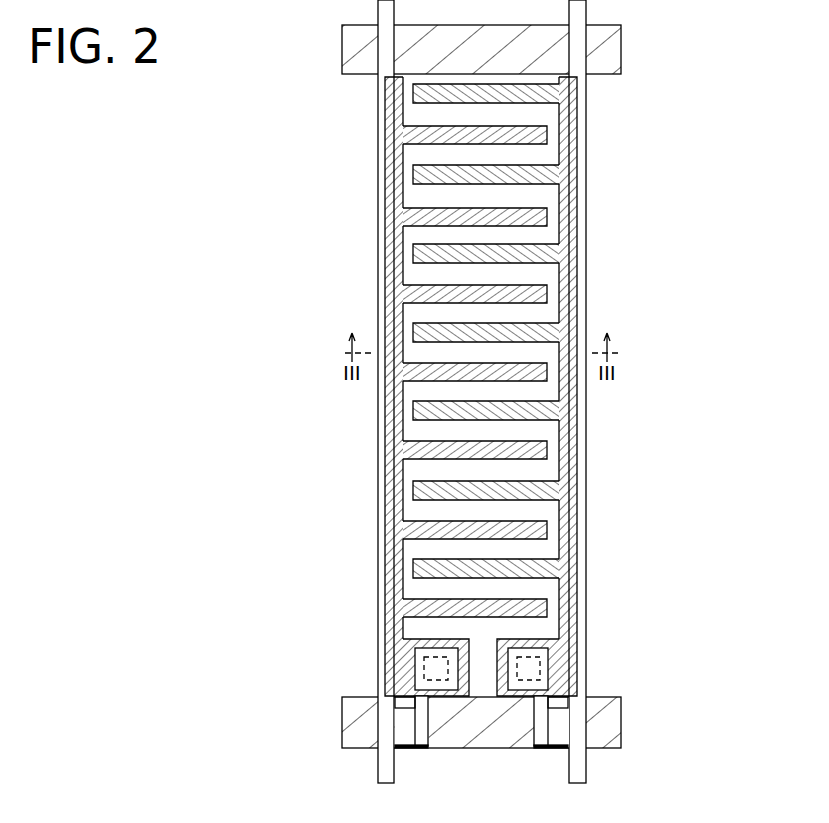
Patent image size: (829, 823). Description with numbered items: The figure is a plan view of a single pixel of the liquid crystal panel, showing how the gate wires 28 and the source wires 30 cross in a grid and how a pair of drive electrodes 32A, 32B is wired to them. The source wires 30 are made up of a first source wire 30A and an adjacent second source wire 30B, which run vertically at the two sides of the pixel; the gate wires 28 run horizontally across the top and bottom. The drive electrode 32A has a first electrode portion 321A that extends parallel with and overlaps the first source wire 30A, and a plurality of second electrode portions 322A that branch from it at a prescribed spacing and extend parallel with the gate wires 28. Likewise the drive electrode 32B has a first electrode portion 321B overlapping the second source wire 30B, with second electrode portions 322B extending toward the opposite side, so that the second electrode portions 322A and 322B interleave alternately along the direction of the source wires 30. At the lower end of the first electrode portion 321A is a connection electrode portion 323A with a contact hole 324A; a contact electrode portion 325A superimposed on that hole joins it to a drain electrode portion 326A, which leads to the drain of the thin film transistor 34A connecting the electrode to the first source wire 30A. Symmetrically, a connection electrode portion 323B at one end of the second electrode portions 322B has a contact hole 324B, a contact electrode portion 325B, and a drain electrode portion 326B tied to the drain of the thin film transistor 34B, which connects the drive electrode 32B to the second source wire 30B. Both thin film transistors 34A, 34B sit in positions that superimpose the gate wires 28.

The gate wire 28 is at (621, 47).
The source wire 30 is at (481, 386).
The first source wire 30A is at (454, 386).
The second source wire 30B is at (509, 386).
The drive electrode 32A is at (347, 386).
The drive electrode 32B is at (618, 386).
The first electrode portion 321A is at (385, 233).
The first electrode portion 321B is at (577, 268).
The second electrode portions 322A is at (547, 135).
The second electrode portions 322B is at (413, 92).
The connection electrode portion 323A is at (395, 648).
The connection electrode portion 323B is at (569, 666).
The contact hole 324A is at (424, 674).
The contact hole 324B is at (540, 674).
The contact electrode portion 325A is at (430, 705).
The contact electrode portion 325B is at (546, 705).
The drain electrode portion 326A is at (413, 717).
The drain electrode portion 326B is at (552, 722).
The thin film transistor 34A is at (405, 748).
The thin film transistor 34B is at (557, 748).